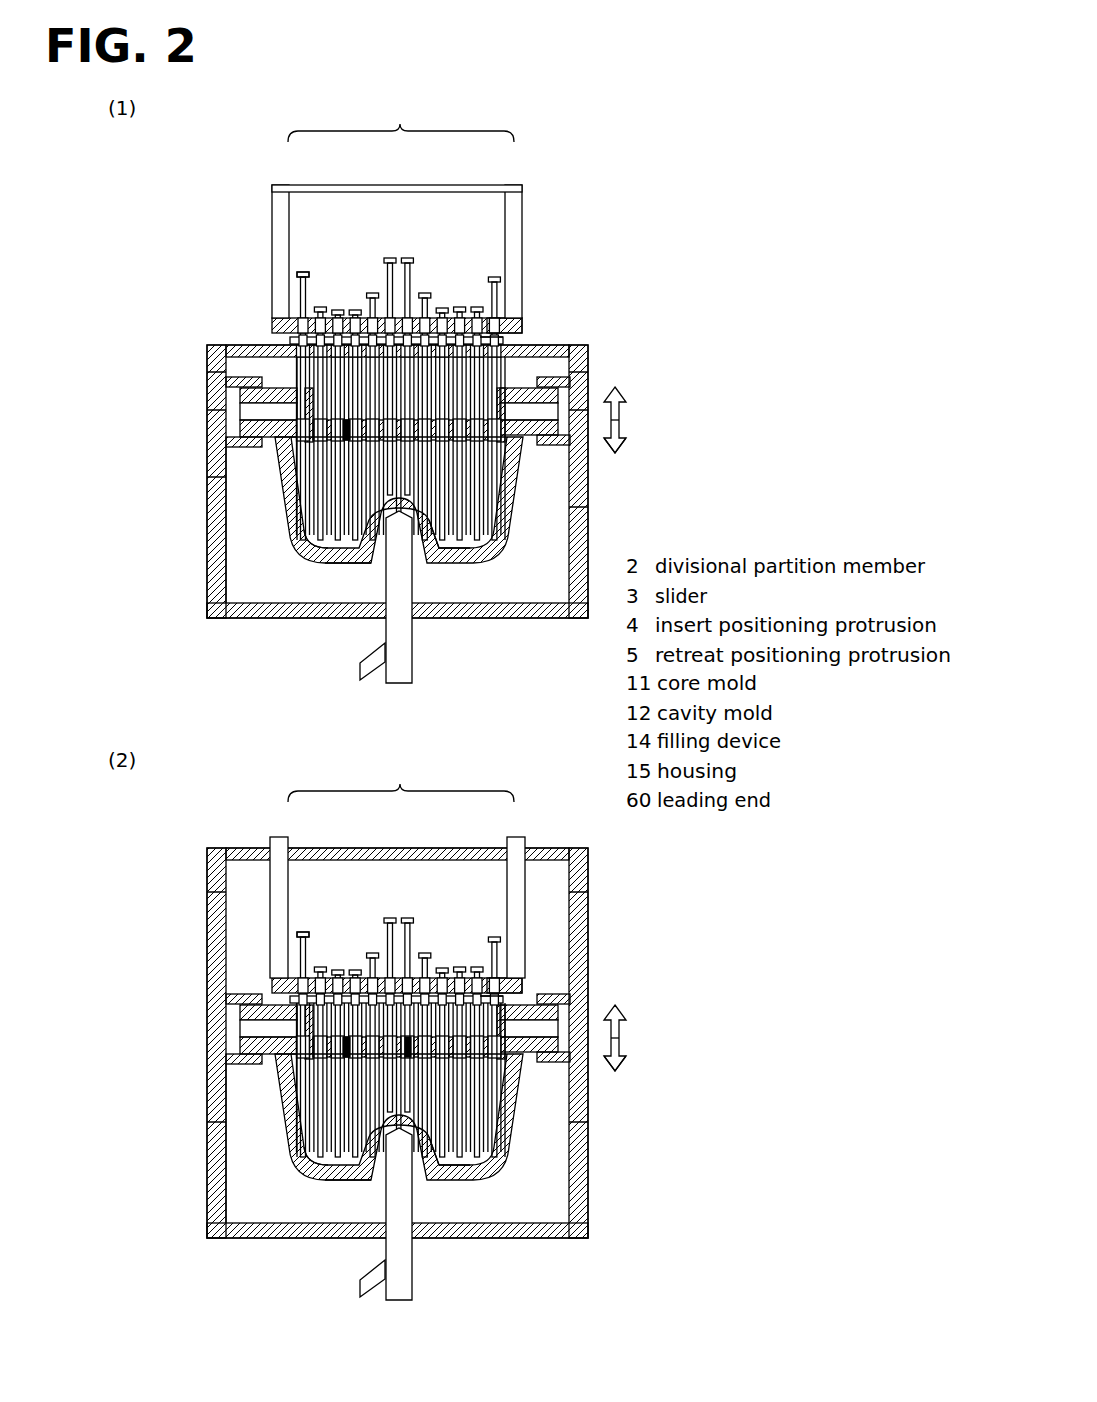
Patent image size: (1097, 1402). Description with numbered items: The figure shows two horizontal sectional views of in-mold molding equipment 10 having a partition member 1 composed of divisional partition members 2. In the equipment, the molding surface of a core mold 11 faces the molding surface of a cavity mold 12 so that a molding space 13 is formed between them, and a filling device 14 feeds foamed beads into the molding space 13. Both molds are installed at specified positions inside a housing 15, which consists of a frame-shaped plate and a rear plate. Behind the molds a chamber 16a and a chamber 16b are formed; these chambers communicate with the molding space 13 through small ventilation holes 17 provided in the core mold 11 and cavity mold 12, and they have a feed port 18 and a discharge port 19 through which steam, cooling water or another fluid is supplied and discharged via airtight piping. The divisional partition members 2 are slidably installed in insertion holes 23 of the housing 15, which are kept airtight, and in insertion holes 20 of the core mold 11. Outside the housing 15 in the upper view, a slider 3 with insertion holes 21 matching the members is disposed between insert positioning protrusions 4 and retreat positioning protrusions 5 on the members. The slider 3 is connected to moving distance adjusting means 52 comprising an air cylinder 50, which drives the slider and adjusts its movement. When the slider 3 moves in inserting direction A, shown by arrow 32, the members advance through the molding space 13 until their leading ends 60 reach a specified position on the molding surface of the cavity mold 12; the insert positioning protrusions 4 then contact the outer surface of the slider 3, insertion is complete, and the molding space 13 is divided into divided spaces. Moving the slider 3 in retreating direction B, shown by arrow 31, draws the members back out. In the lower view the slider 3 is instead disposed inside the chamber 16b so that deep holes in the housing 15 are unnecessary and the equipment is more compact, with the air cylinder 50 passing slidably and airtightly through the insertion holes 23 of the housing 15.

The partition member 1 is at (400, 121).
The divisional partition member 2 is at (406, 651).
The slider 3 is at (395, 637).
The insert positioning protrusion 4 is at (425, 654).
The retreat positioning protrusion 5 is at (302, 541).
The in-mold molding equipment 10 is at (208, 249).
The core mold 11 is at (505, 396).
The cavity mold 12 is at (349, 861).
The molding space 13 is at (492, 522).
The filling device 14 is at (414, 655).
The housing 15 is at (207, 345).
The chamber 16a is at (230, 547).
The chamber 16b is at (228, 353).
The ventilation hole 17 is at (345, 432).
The feed port 18 is at (226, 380).
The discharge port 19 is at (578, 372).
The insertion hole 20 is at (545, 386).
The insertion hole 21 is at (500, 312).
The insertion hole 23 is at (503, 341).
The arrow 31 is at (630, 734).
The arrow 32 is at (625, 768).
The air cylinder 50 is at (272, 216).
The moving distance adjusting means 52 is at (524, 190).
The leading end 60 is at (340, 562).